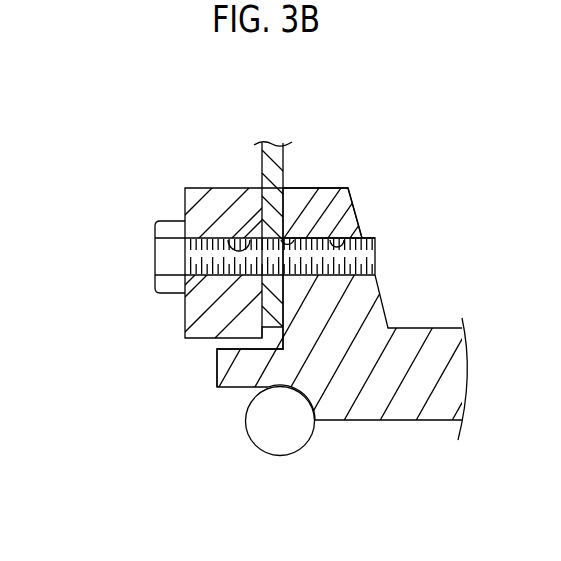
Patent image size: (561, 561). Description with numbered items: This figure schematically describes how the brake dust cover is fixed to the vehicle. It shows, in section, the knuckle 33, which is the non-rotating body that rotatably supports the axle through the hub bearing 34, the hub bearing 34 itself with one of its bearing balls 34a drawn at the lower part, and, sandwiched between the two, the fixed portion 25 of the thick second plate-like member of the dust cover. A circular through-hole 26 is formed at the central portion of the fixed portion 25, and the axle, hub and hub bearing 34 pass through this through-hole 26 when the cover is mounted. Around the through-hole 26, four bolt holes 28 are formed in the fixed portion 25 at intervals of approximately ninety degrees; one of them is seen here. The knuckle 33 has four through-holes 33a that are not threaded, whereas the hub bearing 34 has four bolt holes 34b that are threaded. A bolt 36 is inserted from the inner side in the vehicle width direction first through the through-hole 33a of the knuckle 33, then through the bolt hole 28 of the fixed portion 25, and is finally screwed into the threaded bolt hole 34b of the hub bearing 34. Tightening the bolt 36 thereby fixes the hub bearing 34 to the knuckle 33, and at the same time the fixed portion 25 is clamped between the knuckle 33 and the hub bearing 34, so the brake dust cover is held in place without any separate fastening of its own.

The fixed portion 25 is at (272, 176).
The through-hole 26 is at (272, 329).
The bolt hole 28 is at (312, 237).
The knuckle 33 is at (202, 208).
The through-hole 33a is at (242, 247).
The hub bearing 34 is at (402, 340).
The bearing ball 34a is at (265, 428).
The bolt hole 34b is at (358, 236).
The bolt 36 is at (167, 257).